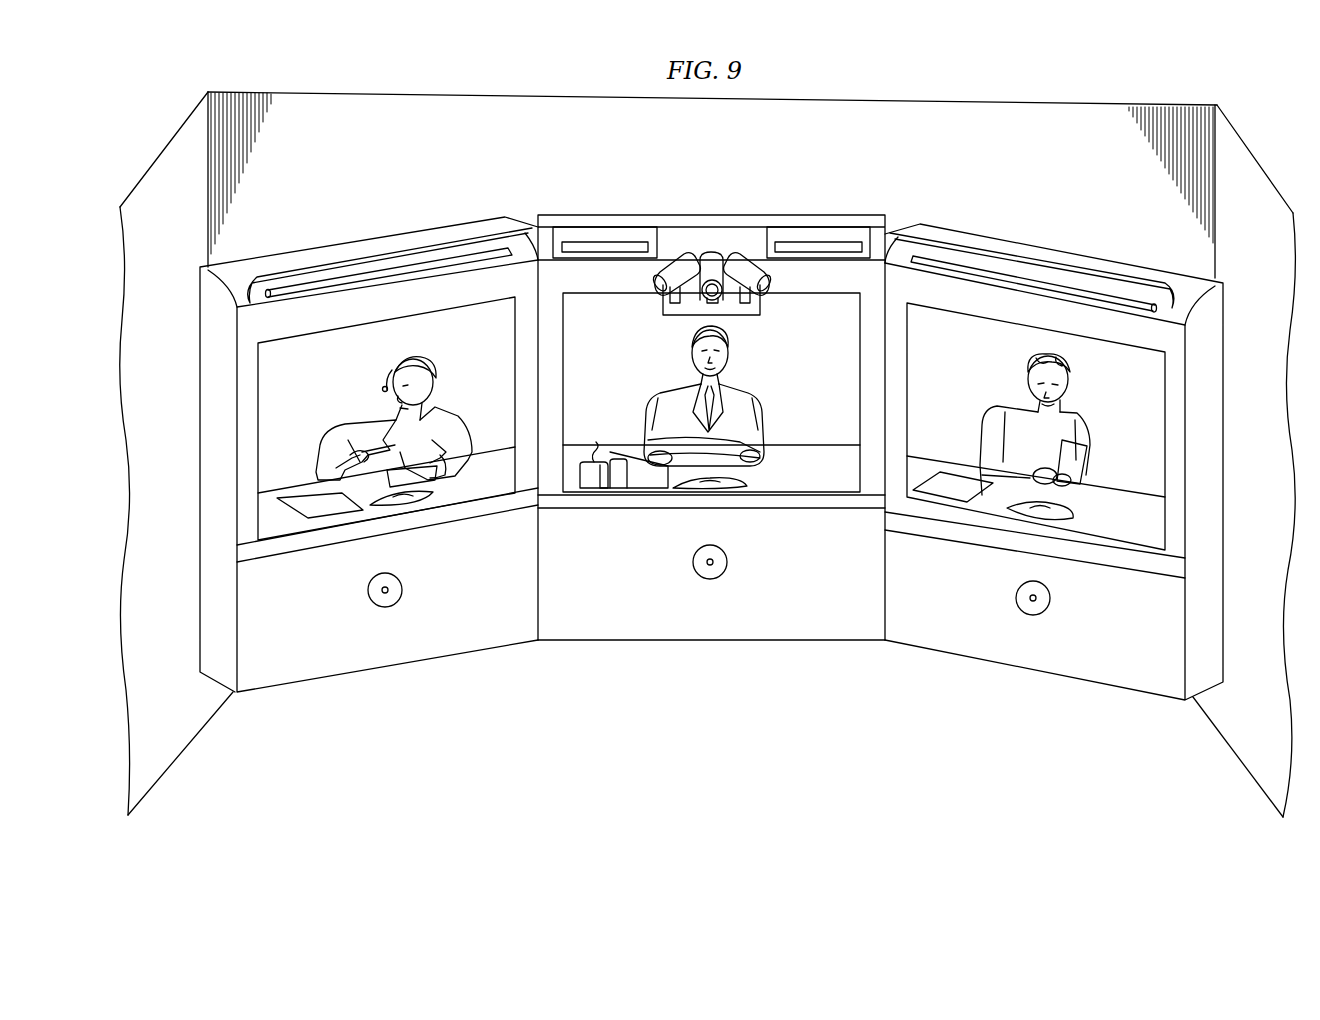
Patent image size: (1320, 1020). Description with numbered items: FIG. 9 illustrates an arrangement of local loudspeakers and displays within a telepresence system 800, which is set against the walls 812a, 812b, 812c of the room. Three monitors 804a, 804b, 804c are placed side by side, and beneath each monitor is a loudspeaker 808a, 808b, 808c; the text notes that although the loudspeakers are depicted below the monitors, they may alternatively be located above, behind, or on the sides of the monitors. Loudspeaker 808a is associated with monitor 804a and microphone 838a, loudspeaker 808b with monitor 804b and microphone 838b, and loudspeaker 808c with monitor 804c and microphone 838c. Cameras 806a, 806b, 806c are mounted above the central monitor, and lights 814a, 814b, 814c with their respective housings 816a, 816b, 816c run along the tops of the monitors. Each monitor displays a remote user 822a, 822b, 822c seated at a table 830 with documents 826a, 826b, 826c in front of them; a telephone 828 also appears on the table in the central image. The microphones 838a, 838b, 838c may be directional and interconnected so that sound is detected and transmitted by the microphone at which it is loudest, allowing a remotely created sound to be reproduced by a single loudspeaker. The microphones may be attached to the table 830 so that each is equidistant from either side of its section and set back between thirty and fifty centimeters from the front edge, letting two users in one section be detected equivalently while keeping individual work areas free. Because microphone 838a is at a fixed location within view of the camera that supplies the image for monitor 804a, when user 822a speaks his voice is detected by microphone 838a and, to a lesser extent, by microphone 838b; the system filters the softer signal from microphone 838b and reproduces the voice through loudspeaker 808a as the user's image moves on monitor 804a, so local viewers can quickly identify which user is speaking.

The telepresence system 800 is at (1003, 90).
The monitor 804a is at (496, 349).
The monitor 804b is at (843, 358).
The monitor 804c is at (974, 358).
The camera 806a is at (687, 250).
The camera 806b is at (713, 250).
The camera 806c is at (742, 250).
The loudspeaker 808a is at (368, 590).
The loudspeaker 808b is at (692, 562).
The loudspeaker 808c is at (1051, 598).
The wall 812a is at (196, 229).
The wall 812b is at (358, 148).
The wall 812c is at (1275, 248).
The light 814a is at (415, 268).
The light 814b is at (612, 240).
The light 814c is at (812, 238).
The light housing 816a is at (344, 262).
The light housing 816b is at (567, 221).
The light housing 816c is at (857, 222).
The user 822a is at (350, 410).
The participant 822b is at (740, 380).
The participant 822c is at (1077, 430).
The document 826a is at (303, 500).
The document 826b is at (633, 456).
The document 826c is at (948, 473).
The telephone 828 is at (597, 462).
The table 830 is at (800, 453).
The microphone 838a is at (486, 456).
The microphone 838b is at (740, 476).
The microphone 838c is at (1060, 510).